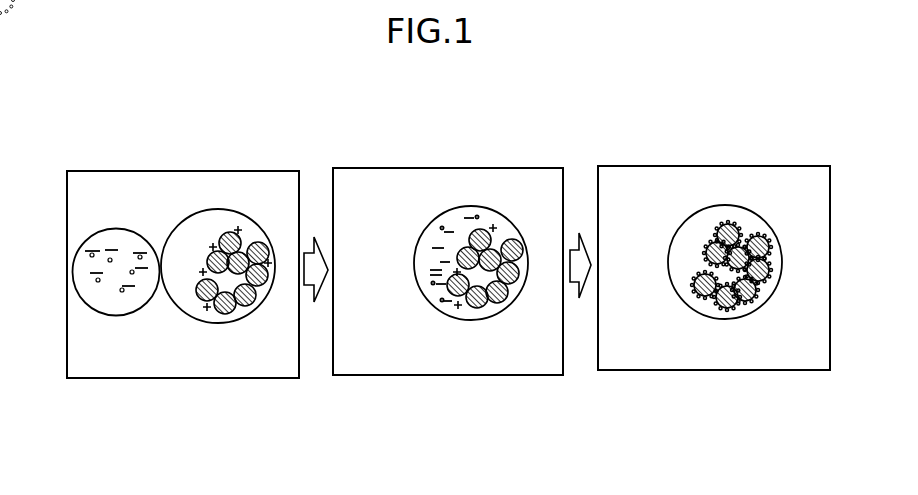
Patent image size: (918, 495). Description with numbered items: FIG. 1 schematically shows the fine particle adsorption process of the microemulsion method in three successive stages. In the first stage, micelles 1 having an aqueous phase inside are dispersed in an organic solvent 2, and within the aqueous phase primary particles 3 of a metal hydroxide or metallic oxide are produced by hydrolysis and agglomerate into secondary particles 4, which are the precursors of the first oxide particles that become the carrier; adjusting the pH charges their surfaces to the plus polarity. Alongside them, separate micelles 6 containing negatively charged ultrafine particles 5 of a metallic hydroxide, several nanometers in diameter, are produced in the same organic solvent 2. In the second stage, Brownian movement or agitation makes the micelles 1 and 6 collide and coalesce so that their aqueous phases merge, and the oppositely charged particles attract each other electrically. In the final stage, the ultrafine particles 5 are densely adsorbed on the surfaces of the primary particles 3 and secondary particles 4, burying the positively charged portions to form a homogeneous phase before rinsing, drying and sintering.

The micelles 1 is at (209, 209).
The organic solvent 2 is at (130, 178).
The primary particles 3 is at (262, 273).
The secondary particles 4 is at (240, 322).
The ultrafine particles 5 is at (98, 282).
The micelles 6 is at (90, 309).